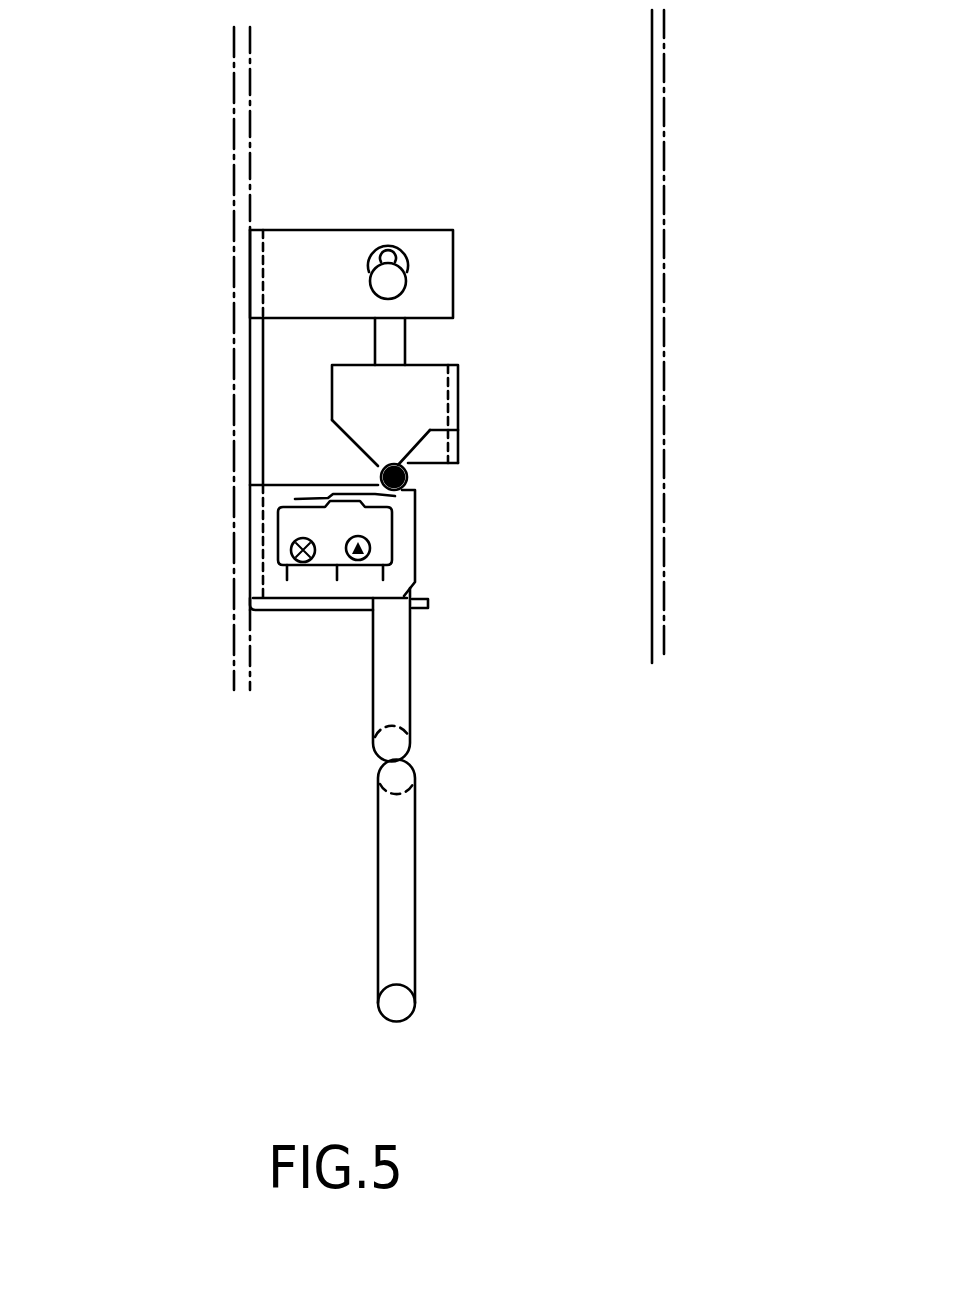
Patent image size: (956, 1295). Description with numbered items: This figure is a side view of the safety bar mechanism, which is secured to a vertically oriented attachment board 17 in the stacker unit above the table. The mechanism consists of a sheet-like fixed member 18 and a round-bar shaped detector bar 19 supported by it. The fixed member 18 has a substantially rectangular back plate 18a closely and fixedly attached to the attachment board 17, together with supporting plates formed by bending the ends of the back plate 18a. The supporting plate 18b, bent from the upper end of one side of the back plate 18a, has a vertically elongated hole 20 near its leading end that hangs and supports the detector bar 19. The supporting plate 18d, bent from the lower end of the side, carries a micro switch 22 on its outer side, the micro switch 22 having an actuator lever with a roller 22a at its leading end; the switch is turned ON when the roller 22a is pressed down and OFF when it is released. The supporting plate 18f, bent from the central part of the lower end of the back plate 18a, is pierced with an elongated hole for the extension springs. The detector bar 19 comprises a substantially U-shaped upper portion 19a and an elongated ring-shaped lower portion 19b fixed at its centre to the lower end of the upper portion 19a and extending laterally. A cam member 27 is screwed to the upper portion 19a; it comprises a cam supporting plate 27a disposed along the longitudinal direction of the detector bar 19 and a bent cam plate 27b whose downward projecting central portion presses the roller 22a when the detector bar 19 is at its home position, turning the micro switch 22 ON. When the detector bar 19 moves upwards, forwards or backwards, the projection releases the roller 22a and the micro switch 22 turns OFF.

The attachment board 17 is at (230, 167).
The fixed member 18 is at (330, 212).
The back plate 18a is at (252, 392).
The supporting plate 18b is at (443, 238).
The supporting plate 18d is at (413, 553).
The supporting plate 18f is at (313, 612).
The vertically elongated hole 20 is at (388, 250).
The micro switch 22 is at (280, 523).
The roller 22a is at (410, 477).
The cam member 27 is at (492, 394).
The cam supporting plate 27a is at (460, 450).
The cam plate 27b is at (410, 378).
The detector bar 19 is at (430, 828).
The upper portion 19a is at (410, 680).
The lower portion 19b is at (415, 893).